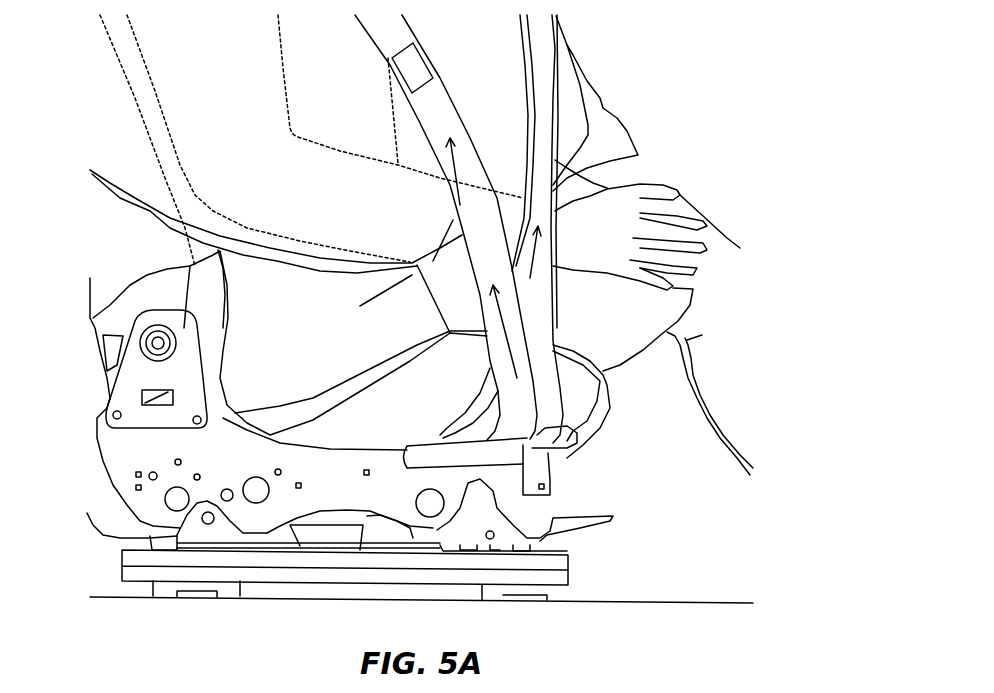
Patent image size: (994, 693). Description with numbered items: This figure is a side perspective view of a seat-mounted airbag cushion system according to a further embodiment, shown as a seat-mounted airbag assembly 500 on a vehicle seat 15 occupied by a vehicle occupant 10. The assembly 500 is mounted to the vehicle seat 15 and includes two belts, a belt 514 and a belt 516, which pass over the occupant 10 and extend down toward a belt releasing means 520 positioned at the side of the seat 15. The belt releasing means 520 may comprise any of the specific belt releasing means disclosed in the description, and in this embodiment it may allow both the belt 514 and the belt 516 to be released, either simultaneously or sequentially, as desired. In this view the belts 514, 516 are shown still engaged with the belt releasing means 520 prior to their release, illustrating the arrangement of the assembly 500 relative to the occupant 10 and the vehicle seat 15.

The vehicle occupant 10 is at (737, 245).
The vehicle seat 15 is at (125, 451).
The seat-mounted airbag assembly 500 is at (571, 266).
The belt 514 is at (440, 95).
The belt 516 is at (547, 125).
The belt releasing means 520 is at (540, 458).